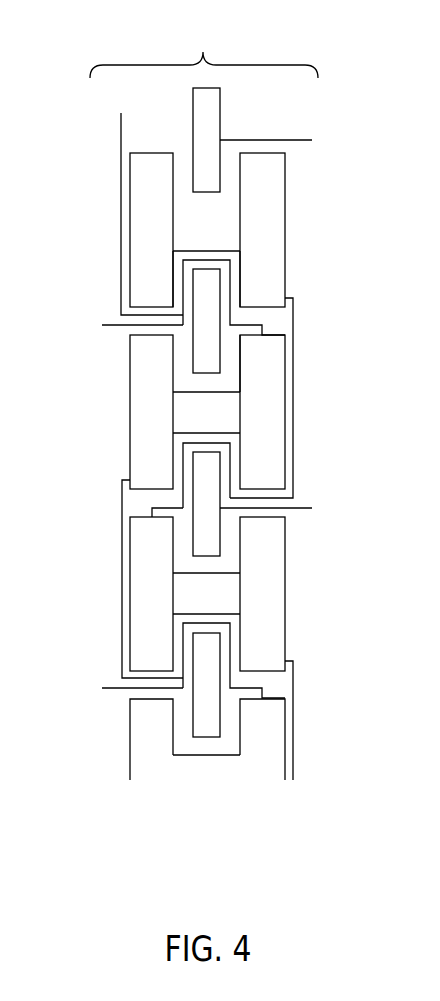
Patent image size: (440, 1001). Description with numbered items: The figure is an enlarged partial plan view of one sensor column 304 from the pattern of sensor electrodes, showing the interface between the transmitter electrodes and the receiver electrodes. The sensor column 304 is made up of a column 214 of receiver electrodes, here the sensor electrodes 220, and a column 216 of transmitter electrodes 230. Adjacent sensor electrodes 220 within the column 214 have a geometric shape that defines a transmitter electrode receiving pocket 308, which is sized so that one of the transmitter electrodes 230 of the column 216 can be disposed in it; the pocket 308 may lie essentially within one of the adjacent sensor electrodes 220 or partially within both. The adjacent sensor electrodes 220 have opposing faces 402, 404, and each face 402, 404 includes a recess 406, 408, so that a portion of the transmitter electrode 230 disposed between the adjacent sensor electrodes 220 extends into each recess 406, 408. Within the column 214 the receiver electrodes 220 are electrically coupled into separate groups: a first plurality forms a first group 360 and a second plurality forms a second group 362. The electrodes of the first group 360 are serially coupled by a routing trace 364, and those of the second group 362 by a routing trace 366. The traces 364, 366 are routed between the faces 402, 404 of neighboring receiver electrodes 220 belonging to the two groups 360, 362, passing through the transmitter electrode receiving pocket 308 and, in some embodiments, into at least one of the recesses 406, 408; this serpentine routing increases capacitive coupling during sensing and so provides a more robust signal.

The column 214 is at (204, 52).
The column 216 is at (204, 52).
The sensor electrode 220 is at (190, 241).
The transmitter electrode 230 is at (192, 118).
The sensor column 304 is at (319, 180).
The transmitter electrode receiving pocket 308 is at (183, 169).
The first group 360 is at (148, 232).
The second group 362 is at (268, 470).
The routing trace 364 is at (293, 312).
The routing trace 366 is at (121, 283).
The face 402 is at (263, 307).
The face 404 is at (273, 337).
The recess 406 is at (241, 261).
The recess 408 is at (242, 371).